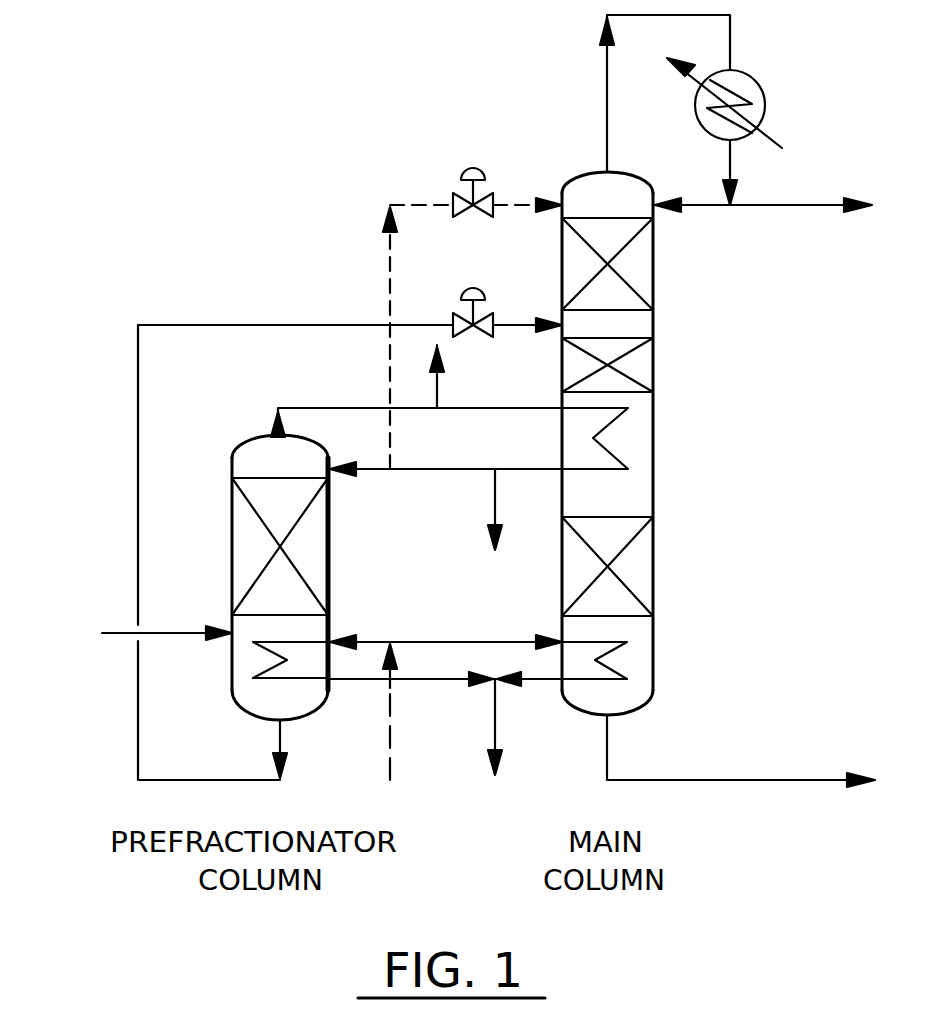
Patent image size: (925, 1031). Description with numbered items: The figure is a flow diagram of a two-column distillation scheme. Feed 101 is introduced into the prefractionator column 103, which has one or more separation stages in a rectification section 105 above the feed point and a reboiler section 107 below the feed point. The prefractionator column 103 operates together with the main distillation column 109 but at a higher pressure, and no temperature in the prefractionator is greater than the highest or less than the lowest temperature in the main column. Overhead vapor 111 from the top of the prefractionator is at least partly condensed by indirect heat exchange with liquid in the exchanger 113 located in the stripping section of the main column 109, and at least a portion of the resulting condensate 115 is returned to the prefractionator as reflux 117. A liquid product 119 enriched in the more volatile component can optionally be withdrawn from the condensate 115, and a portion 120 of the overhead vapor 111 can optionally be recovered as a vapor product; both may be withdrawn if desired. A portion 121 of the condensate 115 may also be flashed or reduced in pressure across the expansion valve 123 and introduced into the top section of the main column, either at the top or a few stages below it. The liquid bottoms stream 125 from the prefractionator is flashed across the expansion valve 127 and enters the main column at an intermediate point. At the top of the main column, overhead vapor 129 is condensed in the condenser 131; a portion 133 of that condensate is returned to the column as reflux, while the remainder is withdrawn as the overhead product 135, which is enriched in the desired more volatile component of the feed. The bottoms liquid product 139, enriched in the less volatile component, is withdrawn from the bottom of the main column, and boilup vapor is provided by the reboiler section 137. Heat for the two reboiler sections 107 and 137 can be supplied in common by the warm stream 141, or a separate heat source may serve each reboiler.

The feed 101 is at (200, 632).
The prefractionator column 103 is at (340, 568).
The rectification section 105 is at (250, 536).
The reboiler section 107 is at (255, 662).
The main distillation column 109 is at (672, 389).
The overhead vapor 111 is at (352, 406).
The exchanger 113 is at (610, 440).
The condensate 115 is at (530, 468).
The reflux 117 is at (368, 473).
The liquid product 119 is at (493, 497).
The vapor product portion 120 is at (437, 383).
The condensate portion 121 is at (388, 253).
The expansion valve 123 is at (470, 170).
The liquid bottoms stream 125 is at (138, 748).
The expansion valve 127 is at (473, 298).
The overhead vapor 129 is at (607, 72).
The condenser 131 is at (760, 90).
The reflux condensate portion 133 is at (710, 210).
The overhead product 135 is at (803, 210).
The reboiler section 137 is at (617, 662).
The bottoms liquid product 139 is at (748, 778).
The warm stream 141 is at (390, 705).